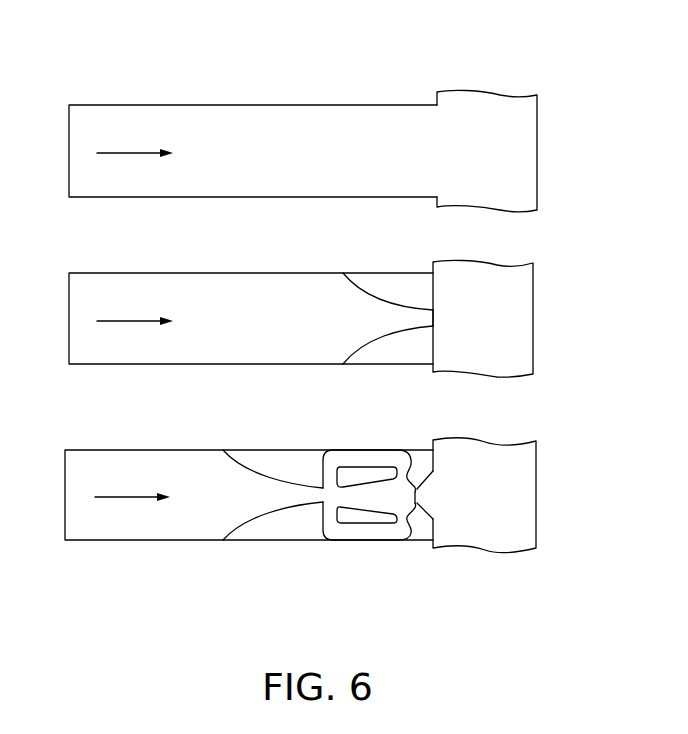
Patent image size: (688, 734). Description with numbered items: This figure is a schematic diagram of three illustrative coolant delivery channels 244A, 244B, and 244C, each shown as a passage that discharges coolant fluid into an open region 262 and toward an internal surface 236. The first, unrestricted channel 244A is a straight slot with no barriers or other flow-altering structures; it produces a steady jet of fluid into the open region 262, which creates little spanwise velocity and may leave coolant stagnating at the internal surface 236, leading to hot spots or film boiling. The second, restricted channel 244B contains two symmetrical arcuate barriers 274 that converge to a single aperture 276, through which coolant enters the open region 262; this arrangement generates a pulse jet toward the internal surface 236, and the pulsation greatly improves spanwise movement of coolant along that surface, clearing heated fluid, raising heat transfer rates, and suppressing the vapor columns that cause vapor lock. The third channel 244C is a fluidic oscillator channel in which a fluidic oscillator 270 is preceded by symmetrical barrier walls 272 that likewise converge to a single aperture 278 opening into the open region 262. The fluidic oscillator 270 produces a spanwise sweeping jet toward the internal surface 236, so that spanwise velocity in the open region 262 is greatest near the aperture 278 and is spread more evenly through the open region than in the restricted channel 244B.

The unrestricted channel 244A is at (82, 116).
The restricted channel 244B is at (82, 284).
The fluidic oscillator channel 244C is at (82, 466).
The open region 262 is at (482, 110).
The internal surface 236 is at (528, 157).
The aperture 276 is at (430, 318).
The arcuate barriers 274 is at (405, 350).
The barrier walls 272 is at (338, 463).
The fluidic oscillator 270 is at (412, 550).
The aperture 278 is at (417, 493).